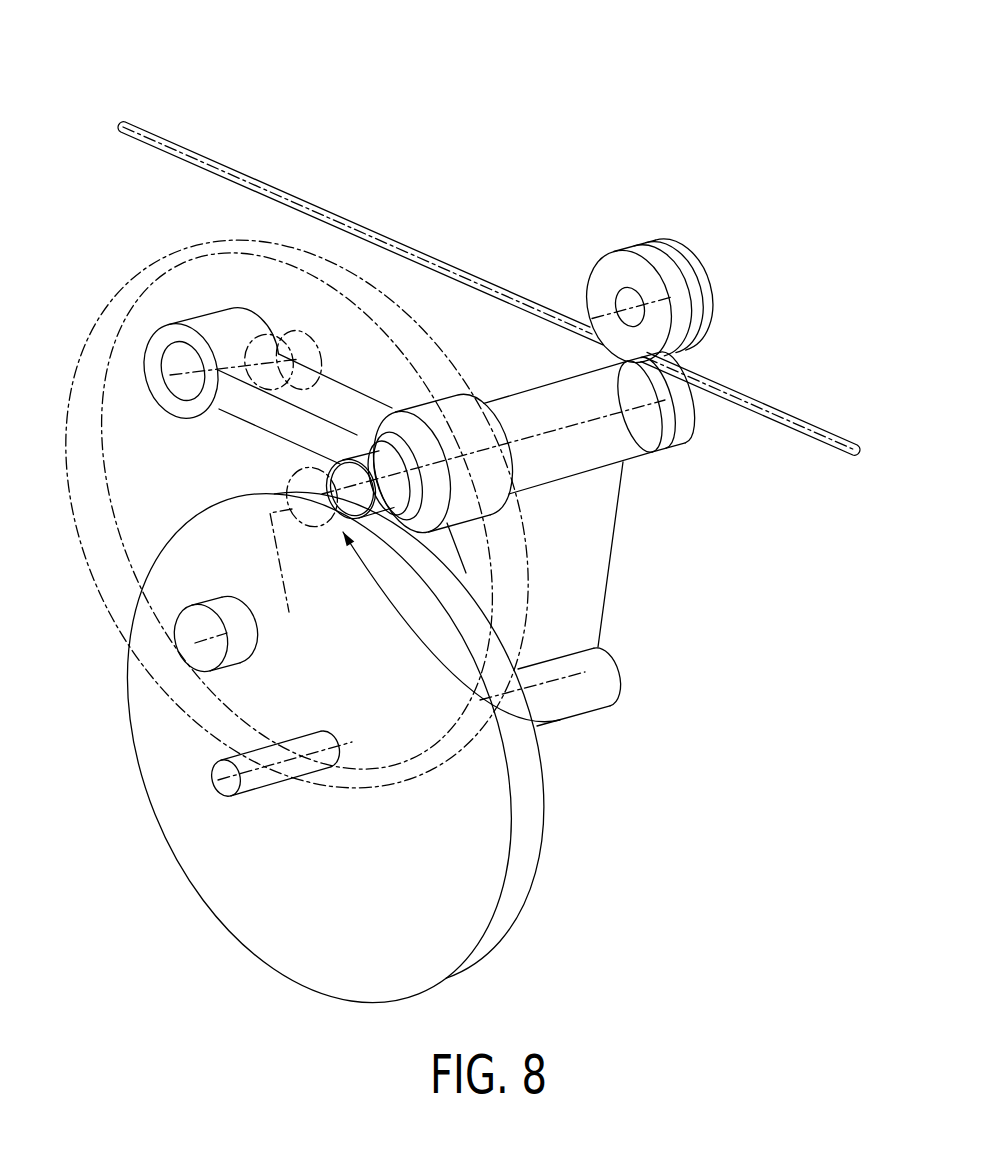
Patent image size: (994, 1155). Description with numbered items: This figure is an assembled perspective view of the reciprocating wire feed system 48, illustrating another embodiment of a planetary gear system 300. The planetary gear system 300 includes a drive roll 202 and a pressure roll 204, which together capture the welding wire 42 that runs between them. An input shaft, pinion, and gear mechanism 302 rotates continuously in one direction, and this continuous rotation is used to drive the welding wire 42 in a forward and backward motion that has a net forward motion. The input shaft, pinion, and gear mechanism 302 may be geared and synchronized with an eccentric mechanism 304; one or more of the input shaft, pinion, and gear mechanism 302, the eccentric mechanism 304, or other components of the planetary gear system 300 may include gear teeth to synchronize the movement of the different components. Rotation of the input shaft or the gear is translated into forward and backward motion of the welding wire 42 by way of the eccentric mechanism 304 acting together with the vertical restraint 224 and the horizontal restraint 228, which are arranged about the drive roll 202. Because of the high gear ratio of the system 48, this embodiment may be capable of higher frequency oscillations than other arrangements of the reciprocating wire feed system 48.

The planetary gear system 300 is at (175, 50).
The reciprocating wire feed system 48 is at (100, 177).
The welding wire 42 is at (363, 227).
The pressure roll 204 is at (657, 262).
The drive roll 202 is at (687, 420).
The horizontal restraint 228 is at (273, 413).
The vertical restraint 224 is at (593, 580).
The input shaft, pinion, and gear mechanism 302 is at (263, 907).
The eccentric mechanism 304 is at (560, 720).